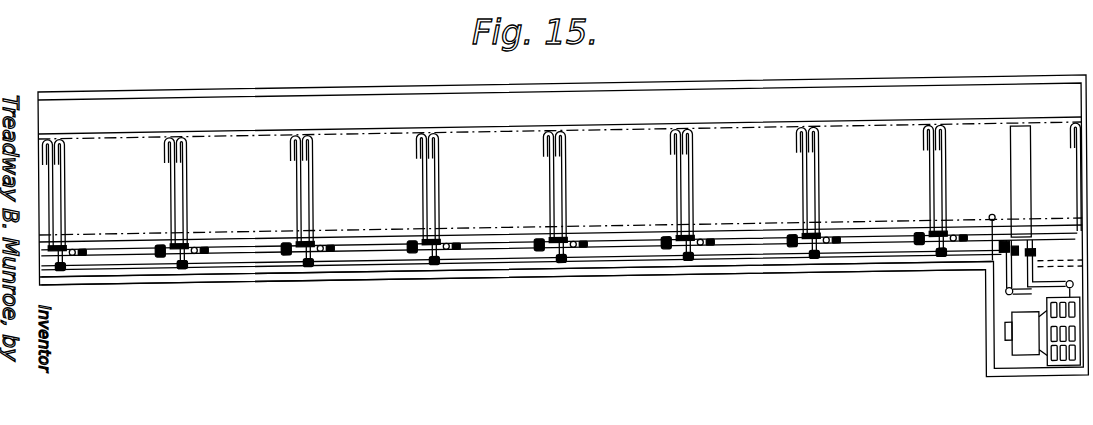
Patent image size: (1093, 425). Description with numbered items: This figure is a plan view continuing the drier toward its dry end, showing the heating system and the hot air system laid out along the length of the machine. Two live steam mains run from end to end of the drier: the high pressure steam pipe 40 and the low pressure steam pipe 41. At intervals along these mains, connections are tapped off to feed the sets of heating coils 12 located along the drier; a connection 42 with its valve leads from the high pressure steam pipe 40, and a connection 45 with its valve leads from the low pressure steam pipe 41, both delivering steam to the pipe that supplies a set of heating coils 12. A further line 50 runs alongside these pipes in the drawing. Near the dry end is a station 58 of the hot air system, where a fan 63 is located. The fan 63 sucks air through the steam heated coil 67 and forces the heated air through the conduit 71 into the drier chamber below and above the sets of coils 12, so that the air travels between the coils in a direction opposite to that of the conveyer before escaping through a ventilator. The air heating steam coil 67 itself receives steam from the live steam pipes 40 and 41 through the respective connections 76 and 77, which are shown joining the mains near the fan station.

The heating coils 12 is at (181, 141).
The high pressure steam pipe 40 is at (207, 276).
The low pressure steam pipe 41 is at (271, 262).
The connection 42 is at (181, 264).
The connection 45 is at (159, 252).
The supply pipe 50 is at (355, 255).
The station 58 is at (988, 350).
The fan 63 is at (1020, 356).
The steam heated coil 67 is at (1048, 372).
The conduit 71 is at (1026, 196).
The connection 76 is at (1051, 296).
The connection 77 is at (1011, 313).